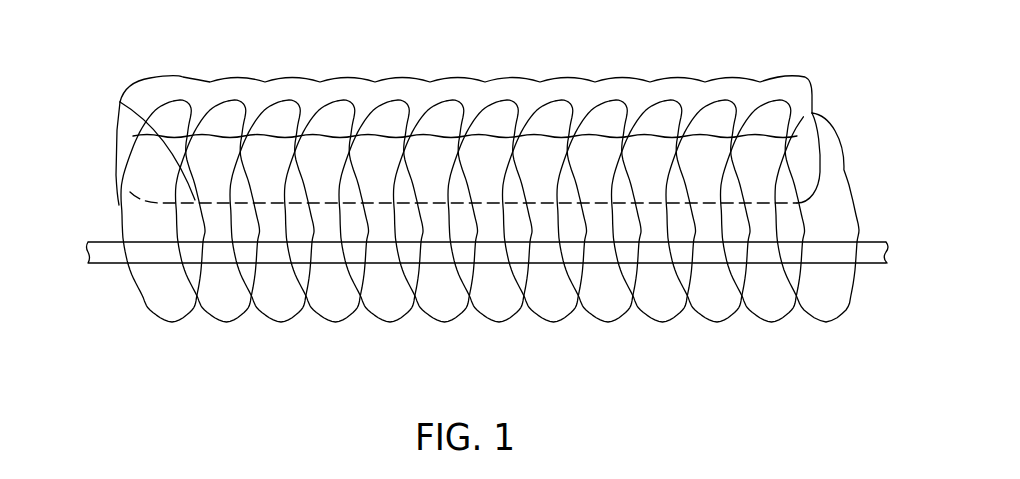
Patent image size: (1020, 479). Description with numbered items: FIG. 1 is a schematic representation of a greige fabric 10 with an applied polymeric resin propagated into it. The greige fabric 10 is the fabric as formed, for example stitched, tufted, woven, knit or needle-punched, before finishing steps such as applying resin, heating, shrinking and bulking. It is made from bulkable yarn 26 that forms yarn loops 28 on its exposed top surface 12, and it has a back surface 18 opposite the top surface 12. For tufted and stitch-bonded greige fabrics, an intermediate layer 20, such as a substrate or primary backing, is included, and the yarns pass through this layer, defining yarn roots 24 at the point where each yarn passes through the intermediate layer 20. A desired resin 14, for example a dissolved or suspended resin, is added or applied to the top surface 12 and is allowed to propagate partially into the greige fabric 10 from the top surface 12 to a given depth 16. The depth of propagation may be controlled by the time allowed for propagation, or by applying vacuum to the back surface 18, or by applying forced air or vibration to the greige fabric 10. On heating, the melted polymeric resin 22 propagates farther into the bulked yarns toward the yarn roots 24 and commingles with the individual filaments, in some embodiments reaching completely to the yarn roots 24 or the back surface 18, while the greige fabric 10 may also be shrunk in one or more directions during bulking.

The greige fabric 10 is at (134, 306).
The top surface 12 is at (519, 198).
The resin 14 is at (517, 122).
The given depth 16 is at (540, 134).
The back surface 18 is at (228, 323).
The intermediate layer 20 is at (86, 248).
The melted polymeric resin 22 is at (377, 203).
The yarn roots 24 is at (858, 206).
The bulkable yarn 26 is at (853, 298).
The yarn loops 28 is at (236, 96).